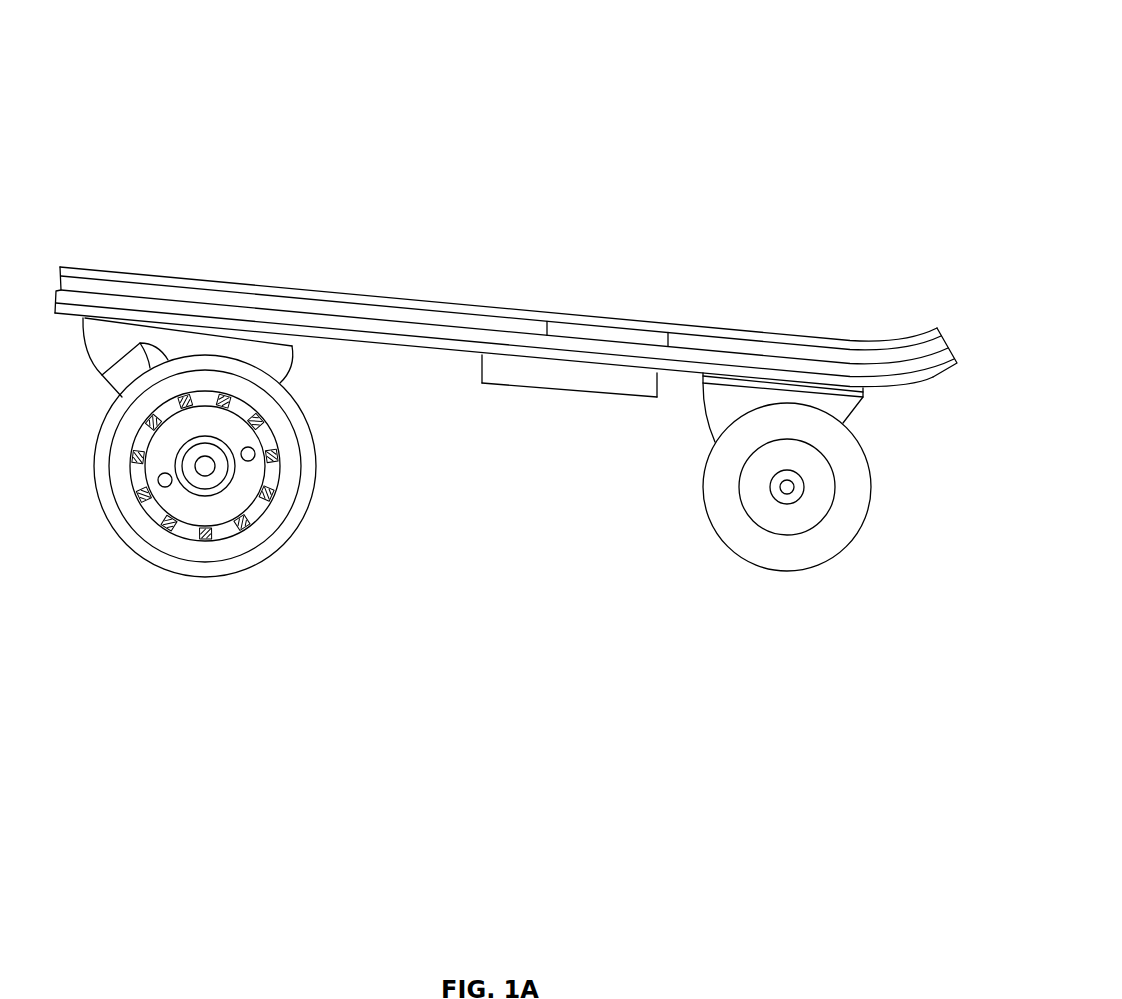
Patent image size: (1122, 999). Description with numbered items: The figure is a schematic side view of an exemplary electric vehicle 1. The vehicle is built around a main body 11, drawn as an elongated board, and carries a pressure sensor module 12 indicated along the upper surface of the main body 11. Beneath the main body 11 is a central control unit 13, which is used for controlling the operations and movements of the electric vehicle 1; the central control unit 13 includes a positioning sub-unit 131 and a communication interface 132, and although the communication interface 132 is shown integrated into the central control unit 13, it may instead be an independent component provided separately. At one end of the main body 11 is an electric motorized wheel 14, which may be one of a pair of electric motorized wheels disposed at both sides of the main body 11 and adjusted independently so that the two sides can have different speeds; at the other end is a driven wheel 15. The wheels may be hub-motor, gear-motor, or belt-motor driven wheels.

The electric vehicle 1 is at (667, 190).
The main body 11 is at (923, 370).
The pressure sensor module 12 is at (793, 335).
The central control unit 13 is at (528, 434).
The positioning sub-unit 131 is at (620, 382).
The communication interface 132 is at (503, 368).
The electric motorized wheel 14 is at (247, 542).
The driven wheel 15 is at (828, 538).